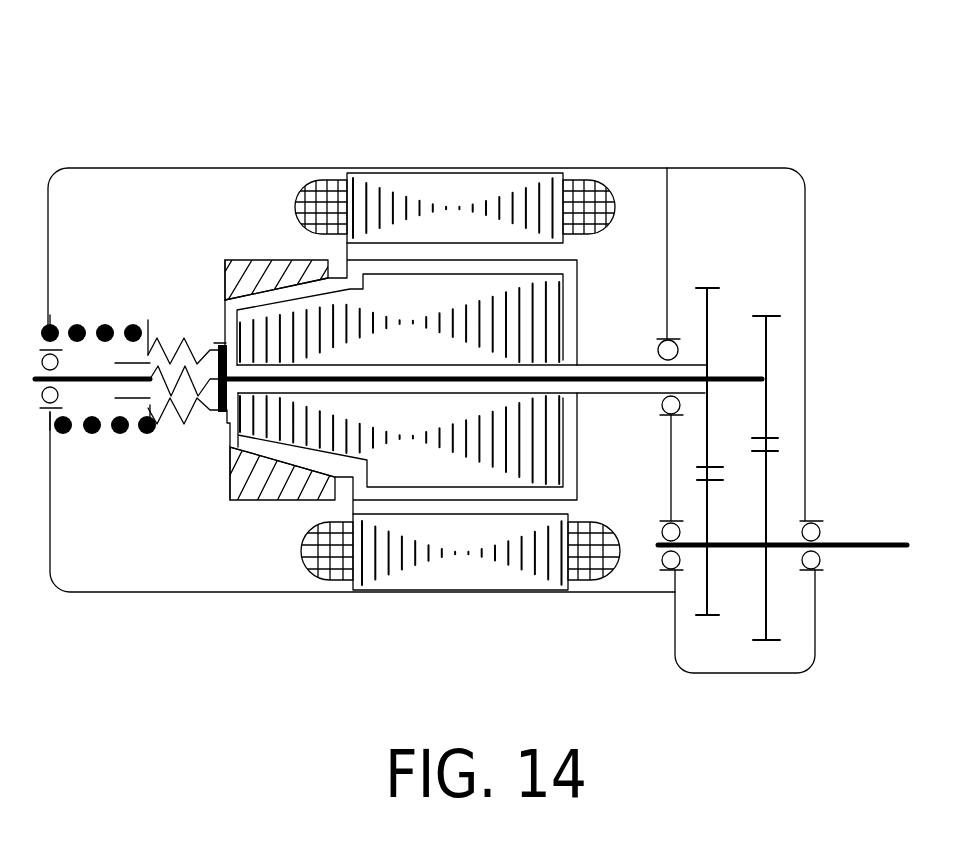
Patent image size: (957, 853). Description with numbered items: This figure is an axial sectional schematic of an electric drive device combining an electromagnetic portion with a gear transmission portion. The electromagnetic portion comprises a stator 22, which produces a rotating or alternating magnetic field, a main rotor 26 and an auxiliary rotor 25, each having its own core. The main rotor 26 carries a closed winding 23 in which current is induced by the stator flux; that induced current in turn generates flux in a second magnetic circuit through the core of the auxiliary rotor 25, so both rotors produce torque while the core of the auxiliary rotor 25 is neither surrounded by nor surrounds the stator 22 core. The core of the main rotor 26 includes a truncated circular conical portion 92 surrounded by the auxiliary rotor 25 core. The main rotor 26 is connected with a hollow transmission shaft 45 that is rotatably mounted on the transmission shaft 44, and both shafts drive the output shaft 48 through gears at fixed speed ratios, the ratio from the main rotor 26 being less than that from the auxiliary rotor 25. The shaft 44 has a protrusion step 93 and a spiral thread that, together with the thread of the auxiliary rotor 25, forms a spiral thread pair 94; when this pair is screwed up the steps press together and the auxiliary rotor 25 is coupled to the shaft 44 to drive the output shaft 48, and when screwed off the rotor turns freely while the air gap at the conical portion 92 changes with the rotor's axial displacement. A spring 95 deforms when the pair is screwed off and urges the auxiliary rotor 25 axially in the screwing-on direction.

The stator 22 is at (390, 200).
The main rotor winding 23 is at (518, 267).
The auxiliary rotor 25 is at (249, 290).
The main rotor 26 is at (443, 303).
The transmission shaft 44 is at (730, 373).
The transmission shaft 45 is at (630, 365).
The output shaft 48 is at (872, 540).
The truncated circular conical portion 92 is at (298, 315).
The protrusion step 93 is at (216, 345).
The spiral thread pair 94 is at (168, 336).
The spring 95 is at (106, 328).